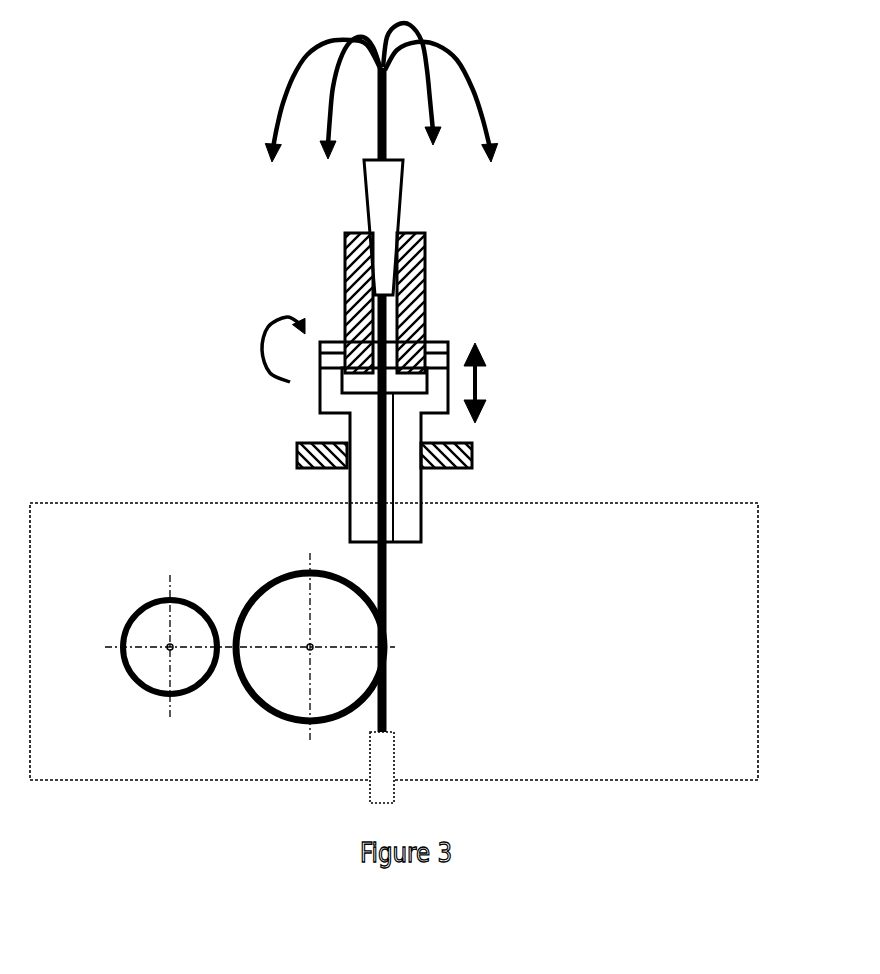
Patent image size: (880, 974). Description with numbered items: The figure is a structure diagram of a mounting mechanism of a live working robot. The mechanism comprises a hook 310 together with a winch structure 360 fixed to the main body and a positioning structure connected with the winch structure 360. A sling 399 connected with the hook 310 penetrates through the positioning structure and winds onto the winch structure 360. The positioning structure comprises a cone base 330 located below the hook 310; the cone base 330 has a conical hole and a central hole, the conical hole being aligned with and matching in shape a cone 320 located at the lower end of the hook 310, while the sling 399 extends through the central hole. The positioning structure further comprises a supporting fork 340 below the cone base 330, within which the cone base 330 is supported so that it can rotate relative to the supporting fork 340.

The hook 310 is at (316, 92).
The cone 320 is at (310, 227).
The cone base 330 is at (452, 303).
The supporting fork 340 is at (452, 442).
The winch structure 360 is at (250, 630).
The sling 399 is at (455, 400).